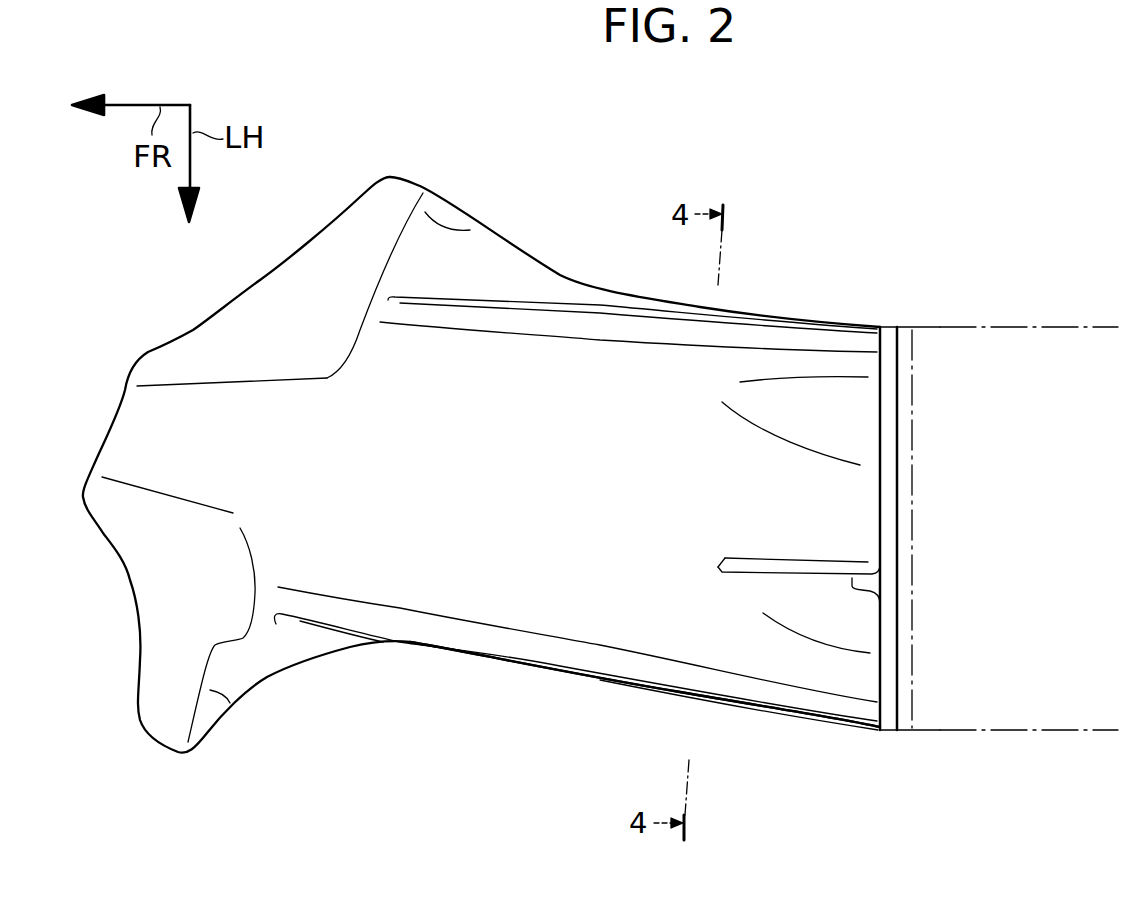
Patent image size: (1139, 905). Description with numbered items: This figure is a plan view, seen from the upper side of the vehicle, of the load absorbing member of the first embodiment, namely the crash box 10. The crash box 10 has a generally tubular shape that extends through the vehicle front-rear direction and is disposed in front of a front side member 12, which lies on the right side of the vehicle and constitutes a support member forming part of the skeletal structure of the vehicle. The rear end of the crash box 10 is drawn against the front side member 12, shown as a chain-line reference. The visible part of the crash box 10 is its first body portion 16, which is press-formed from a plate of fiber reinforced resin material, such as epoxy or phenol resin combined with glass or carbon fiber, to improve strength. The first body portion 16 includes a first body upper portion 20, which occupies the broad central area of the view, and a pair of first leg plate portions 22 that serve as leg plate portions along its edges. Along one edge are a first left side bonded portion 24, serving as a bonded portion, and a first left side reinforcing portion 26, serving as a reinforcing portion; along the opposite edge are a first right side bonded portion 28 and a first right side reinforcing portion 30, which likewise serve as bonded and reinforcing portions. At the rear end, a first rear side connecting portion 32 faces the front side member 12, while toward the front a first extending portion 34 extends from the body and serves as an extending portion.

The crash box 10 is at (862, 211).
The front side member 12 is at (993, 326).
The first body portion 16 is at (808, 718).
The first body upper portion 20 is at (577, 488).
The first leg plate portions 22 is at (778, 350).
The first left side bonded portion 24 is at (637, 668).
The first left side reinforcing portion 26 is at (735, 705).
The first right side bonded portion 28 is at (818, 343).
The first right side reinforcing portion 30 is at (752, 318).
The first rear side connecting portion 32 is at (898, 487).
The first extending portion 34 is at (188, 432).